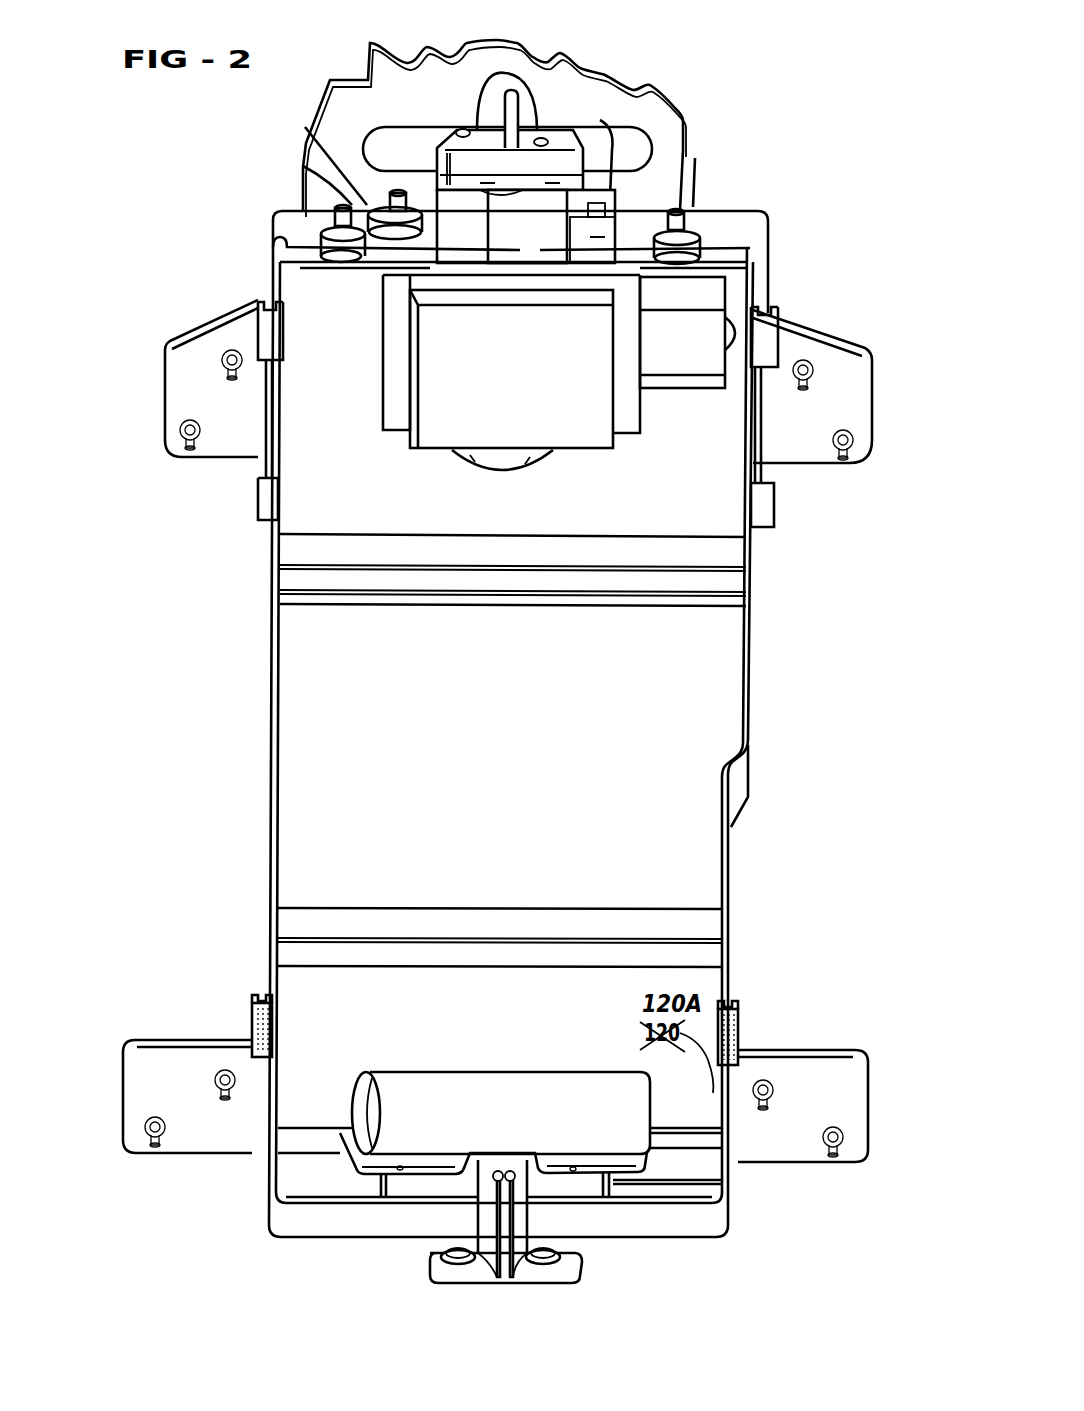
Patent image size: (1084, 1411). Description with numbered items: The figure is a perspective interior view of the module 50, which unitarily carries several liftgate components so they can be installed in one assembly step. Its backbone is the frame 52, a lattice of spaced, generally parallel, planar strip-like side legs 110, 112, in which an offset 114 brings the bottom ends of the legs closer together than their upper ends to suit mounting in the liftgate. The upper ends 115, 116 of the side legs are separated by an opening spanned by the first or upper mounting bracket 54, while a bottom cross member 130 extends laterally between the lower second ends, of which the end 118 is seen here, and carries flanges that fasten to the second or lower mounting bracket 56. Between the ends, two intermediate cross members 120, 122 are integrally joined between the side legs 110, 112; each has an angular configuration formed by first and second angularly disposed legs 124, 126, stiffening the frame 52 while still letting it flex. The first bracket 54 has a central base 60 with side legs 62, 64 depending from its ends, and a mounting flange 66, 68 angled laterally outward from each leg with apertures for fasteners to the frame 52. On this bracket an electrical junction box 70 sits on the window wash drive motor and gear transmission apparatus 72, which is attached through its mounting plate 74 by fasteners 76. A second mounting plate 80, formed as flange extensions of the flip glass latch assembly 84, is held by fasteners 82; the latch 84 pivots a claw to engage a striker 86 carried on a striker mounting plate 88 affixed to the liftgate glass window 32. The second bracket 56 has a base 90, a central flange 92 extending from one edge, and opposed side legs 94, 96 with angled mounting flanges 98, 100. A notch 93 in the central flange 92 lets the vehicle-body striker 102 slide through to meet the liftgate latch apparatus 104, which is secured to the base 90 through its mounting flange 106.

The liftgate glass window 32 is at (628, 97).
The module 50 is at (815, 210).
The frame 52 is at (245, 598).
The first or upper mounting bracket 54 is at (720, 225).
The second or lower mounting bracket 56 is at (266, 1238).
The central base 60 is at (303, 166).
The side leg 62 is at (268, 290).
The side leg 64 is at (772, 283).
The mounting flange 66 is at (190, 392).
The mounting flange 68 is at (850, 363).
The electrical junction box 70 is at (383, 357).
The window wash drive motor and gear transmission apparatus 72 is at (428, 458).
The mounting plate 74 is at (273, 240).
The fasteners 76 is at (305, 207).
The second mounting plate 80 is at (685, 150).
The fasteners 82 is at (328, 108).
The flip glass latch assembly 84 is at (447, 112).
The striker 86 is at (520, 100).
The striker mounting plate 88 is at (400, 135).
The base 90 is at (665, 1193).
The central flange 92 is at (667, 1243).
The notch 93 is at (517, 1262).
The side leg 94 is at (732, 1208).
The side leg 96 is at (260, 1178).
The mounting flange 98 is at (800, 1063).
The mounting flange 100 is at (177, 1052).
The striker 102 is at (490, 1262).
The liftgate latch apparatus 104 is at (452, 1080).
The mounting flange 106 is at (413, 1170).
The side leg 110 is at (270, 753).
The side leg 112 is at (753, 723).
The offset 114 is at (748, 797).
The upper end 115 is at (283, 427).
The upper end 116 is at (747, 417).
The second end 118 is at (273, 1087).
The cross member 120 is at (407, 585).
The cross member 122 is at (414, 893).
The first leg 124 is at (613, 585).
The second leg 126 is at (550, 533).
The bottom cross member 130 is at (717, 1142).